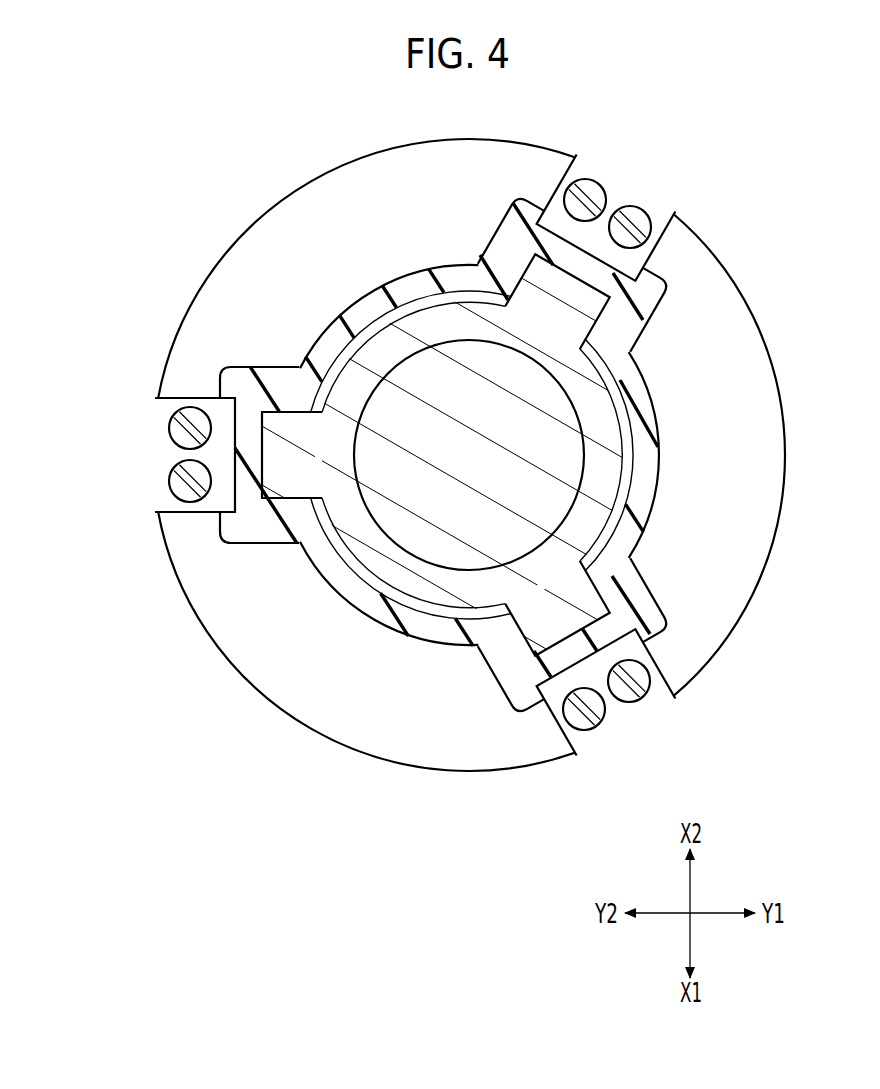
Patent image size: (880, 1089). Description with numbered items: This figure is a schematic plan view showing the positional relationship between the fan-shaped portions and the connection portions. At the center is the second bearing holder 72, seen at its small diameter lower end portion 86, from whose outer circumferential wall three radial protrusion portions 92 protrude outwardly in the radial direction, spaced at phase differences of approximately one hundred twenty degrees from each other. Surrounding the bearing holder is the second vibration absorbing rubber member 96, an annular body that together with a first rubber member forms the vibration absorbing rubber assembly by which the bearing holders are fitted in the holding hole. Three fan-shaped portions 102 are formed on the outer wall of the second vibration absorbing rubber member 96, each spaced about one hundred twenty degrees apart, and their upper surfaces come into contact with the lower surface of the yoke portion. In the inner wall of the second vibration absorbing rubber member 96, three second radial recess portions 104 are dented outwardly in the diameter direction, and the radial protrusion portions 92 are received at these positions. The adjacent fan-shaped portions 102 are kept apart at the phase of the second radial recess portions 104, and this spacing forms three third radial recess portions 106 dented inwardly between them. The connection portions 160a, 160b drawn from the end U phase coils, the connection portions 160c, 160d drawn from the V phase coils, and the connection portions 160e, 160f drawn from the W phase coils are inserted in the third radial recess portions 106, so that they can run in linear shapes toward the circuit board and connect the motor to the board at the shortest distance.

The second bearing holder 72 is at (604, 430).
The small diameter lower end portion 86 is at (437, 336).
The radial protrusion portion 92 is at (533, 277).
The second vibration absorbing rubber member 96 is at (714, 237).
The fan-shaped portion 102 is at (340, 172).
The second radial recess portion 104 is at (263, 443).
The third radial recess portion 106 is at (578, 167).
The connection portion 160a is at (588, 716).
The connection portion 160b is at (180, 477).
The connection portion 160c is at (178, 428).
The connection portion 160d is at (600, 190).
The connection portion 160e is at (633, 218).
The connection portion 160f is at (631, 690).